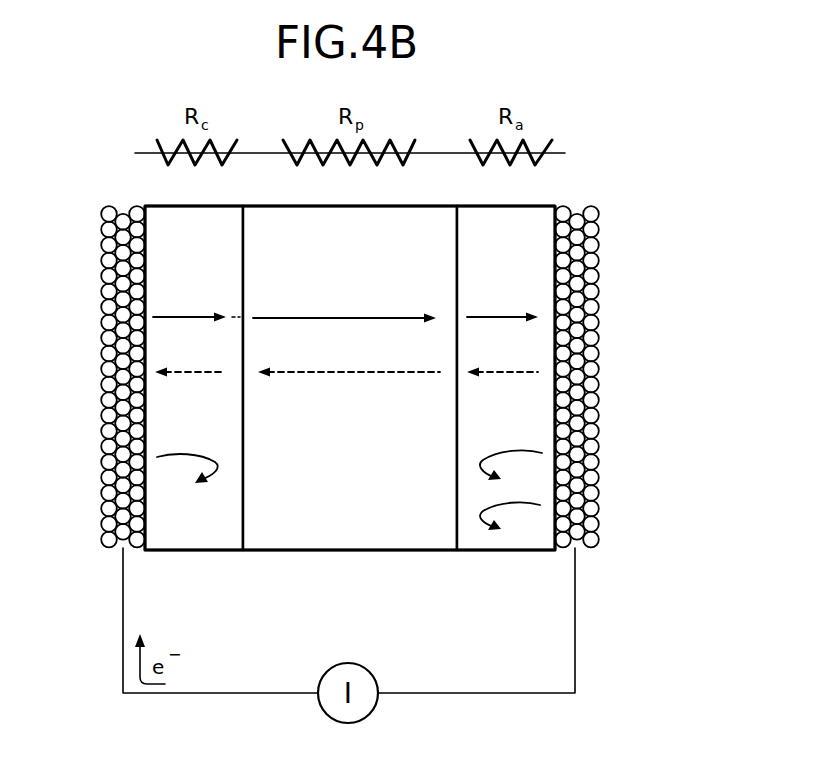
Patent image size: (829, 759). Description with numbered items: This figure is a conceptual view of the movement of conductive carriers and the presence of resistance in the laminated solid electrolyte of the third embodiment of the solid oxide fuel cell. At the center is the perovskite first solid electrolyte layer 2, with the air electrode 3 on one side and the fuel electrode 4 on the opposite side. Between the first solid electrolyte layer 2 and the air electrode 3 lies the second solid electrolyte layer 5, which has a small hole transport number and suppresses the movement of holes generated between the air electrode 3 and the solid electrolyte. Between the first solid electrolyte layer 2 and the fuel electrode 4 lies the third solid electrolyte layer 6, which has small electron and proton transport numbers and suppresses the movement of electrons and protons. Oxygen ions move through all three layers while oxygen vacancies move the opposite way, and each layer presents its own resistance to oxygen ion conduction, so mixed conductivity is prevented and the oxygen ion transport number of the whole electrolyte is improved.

The first solid electrolyte layer 2 is at (352, 538).
The air electrode 3 is at (115, 475).
The fuel electrode 4 is at (585, 468).
The second solid electrolyte layer 5 is at (201, 538).
The third solid electrolyte layer 6 is at (518, 538).